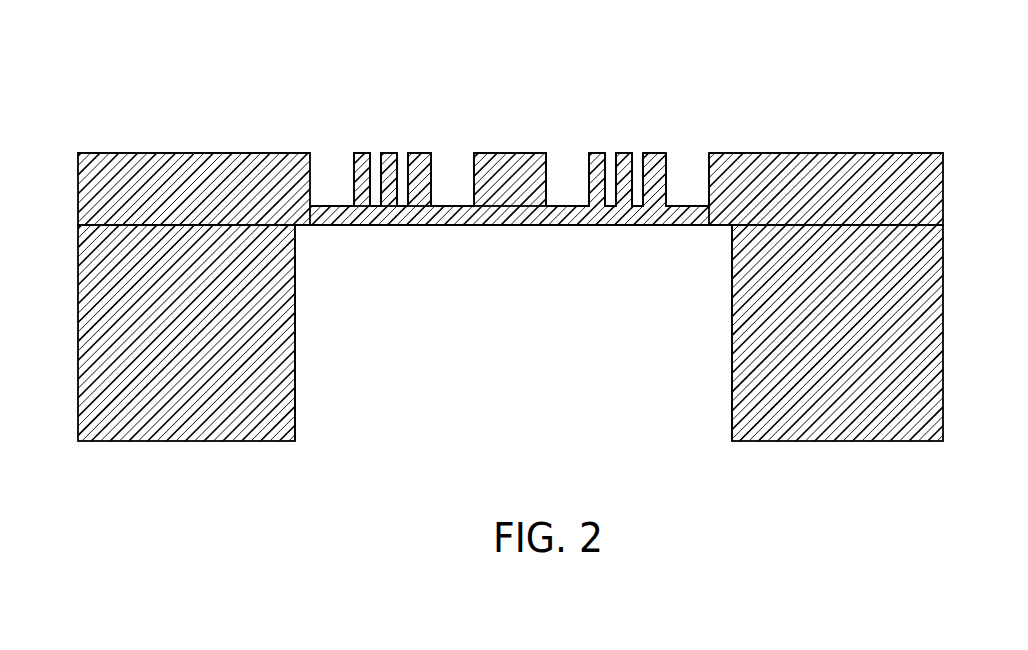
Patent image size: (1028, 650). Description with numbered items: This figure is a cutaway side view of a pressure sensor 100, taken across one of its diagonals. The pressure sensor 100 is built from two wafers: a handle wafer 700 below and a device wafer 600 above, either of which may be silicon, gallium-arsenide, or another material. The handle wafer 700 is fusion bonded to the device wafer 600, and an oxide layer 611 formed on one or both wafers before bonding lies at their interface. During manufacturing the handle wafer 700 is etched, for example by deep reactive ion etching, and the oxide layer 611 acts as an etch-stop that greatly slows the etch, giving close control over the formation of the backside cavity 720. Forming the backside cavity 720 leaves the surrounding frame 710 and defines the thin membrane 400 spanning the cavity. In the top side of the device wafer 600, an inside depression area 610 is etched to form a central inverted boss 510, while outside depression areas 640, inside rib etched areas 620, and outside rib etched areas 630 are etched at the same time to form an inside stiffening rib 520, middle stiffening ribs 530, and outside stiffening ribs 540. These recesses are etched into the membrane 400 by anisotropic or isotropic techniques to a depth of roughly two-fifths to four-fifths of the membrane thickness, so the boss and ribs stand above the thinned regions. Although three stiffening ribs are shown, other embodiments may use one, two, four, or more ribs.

The pressure sensor 100 is at (514, 325).
The membrane 400 is at (571, 223).
The inverted boss 510 is at (510, 153).
The inside stiffening rib 520 is at (419, 153).
The middle stiffening ribs 530 is at (389, 153).
The outside stiffening ribs 540 is at (362, 153).
The device wafer 600 is at (914, 188).
The inside depression area 610 is at (564, 165).
The oxide layer 611 is at (943, 225).
The inside rib etched areas 620 is at (610, 168).
The outside rib etched areas 630 is at (636, 165).
The outside depression areas 640 is at (690, 165).
The handle wafer 700 is at (916, 358).
The frame 710 is at (268, 357).
The backside cavity 720 is at (660, 414).